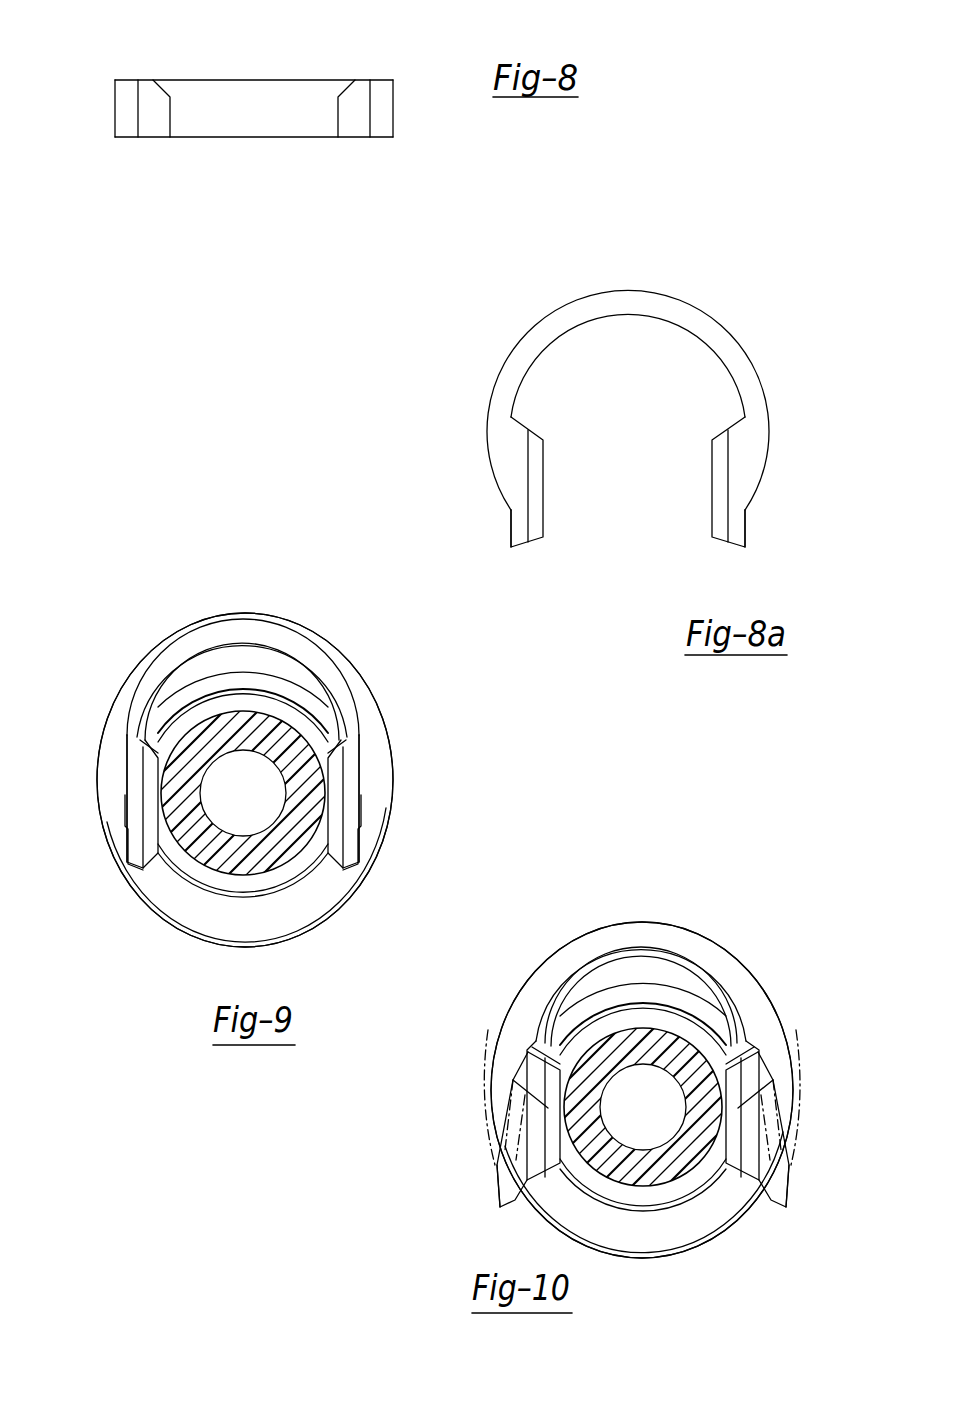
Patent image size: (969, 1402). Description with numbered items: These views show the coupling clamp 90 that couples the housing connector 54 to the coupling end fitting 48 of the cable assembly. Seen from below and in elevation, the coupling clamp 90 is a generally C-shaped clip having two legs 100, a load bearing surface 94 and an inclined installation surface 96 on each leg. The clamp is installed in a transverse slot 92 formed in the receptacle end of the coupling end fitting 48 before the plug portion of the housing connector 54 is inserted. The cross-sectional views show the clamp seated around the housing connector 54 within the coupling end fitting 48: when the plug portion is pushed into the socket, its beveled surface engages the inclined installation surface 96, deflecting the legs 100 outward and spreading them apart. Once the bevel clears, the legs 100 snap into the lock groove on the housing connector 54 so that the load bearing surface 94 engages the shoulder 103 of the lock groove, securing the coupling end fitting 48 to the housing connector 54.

In FIG. 9, the coupling end fitting 48 is at (205, 913).
In FIG. 10, the coupling end fitting 48 is at (665, 1238).
In FIG. 9, the housing connector 54 is at (305, 770).
In FIG. 10, the housing connector 54 is at (632, 1180).
In FIG. 8, the coupling clamp 90 is at (257, 82).
In FIG. 8A, the coupling clamp 90 is at (670, 297).
In FIG. 9, the coupling clamp 90 is at (258, 620).
In FIG. 10, the coupling clamp 90 is at (655, 932).
In FIG. 9, the transverse slot 92 is at (391, 780).
In FIG. 10, the transverse slot 92 is at (790, 1118).
In FIG. 8, the load bearing surface 94 is at (152, 138).
In FIG. 8, the inclined installation surface 96 is at (166, 92).
In FIG. 8A, the inclined installation surface 96 is at (540, 480).
In FIG. 9, the inclined installation surface 96 is at (153, 838).
In FIG. 10, the inclined installation surface 96 is at (521, 1187).
In FIG. 8, the legs 100 is at (114, 107).
In FIG. 8A, the legs 100 is at (491, 470).
In FIG. 9, the legs 100 is at (132, 798).
In FIG. 10, the legs 100 is at (500, 1192).
In FIG. 9, the shoulder 103 is at (283, 713).
In FIG. 10, the shoulder 103 is at (703, 1043).